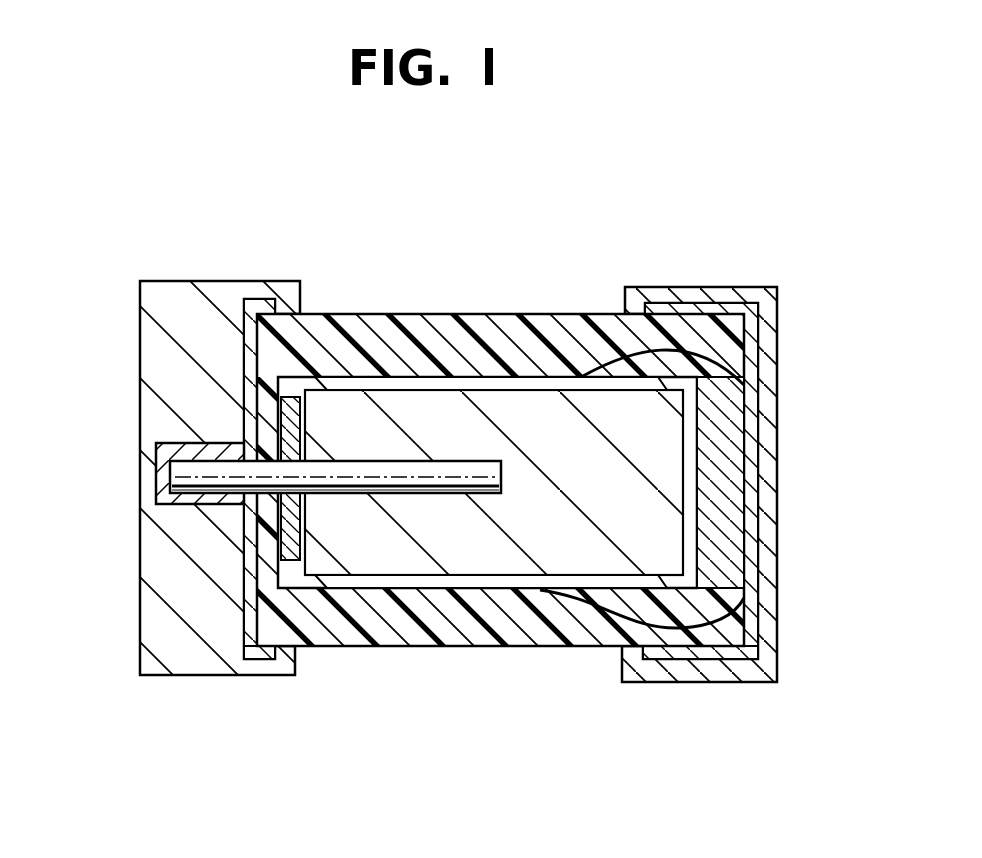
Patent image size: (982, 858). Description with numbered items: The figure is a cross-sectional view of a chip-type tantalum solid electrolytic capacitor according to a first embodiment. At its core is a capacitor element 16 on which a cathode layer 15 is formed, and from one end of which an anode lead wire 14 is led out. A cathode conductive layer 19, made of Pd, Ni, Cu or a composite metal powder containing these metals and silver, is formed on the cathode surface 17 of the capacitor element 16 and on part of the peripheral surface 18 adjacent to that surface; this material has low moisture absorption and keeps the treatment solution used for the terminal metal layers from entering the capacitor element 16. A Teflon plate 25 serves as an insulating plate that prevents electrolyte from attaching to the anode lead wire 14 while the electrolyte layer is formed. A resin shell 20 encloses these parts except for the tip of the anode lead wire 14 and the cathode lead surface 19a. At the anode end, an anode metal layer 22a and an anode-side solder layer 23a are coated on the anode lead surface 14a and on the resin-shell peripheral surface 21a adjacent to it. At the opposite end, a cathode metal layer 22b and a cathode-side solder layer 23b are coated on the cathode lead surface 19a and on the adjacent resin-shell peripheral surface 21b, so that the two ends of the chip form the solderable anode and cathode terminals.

The anode lead wire 14 is at (157, 480).
The anode lead surface 14a is at (160, 462).
The cathode layer 15 is at (361, 378).
The capacitor element 16 is at (489, 400).
The cathode surface 17 is at (700, 504).
The peripheral surface 18 is at (548, 598).
The cathode conductive layer 19 is at (701, 352).
The cathode lead surface 19a is at (745, 412).
The resin shell 20 is at (451, 646).
The resin-shell peripheral surface 21a is at (268, 299).
The resin-shell peripheral surface 21b is at (726, 660).
The anode metal layer 22a is at (255, 659).
The cathode metal layer 22b is at (662, 657).
The anode-side solder layer 23a is at (157, 356).
The cathode-side solder layer 23b is at (768, 594).
The Teflon plate 25 is at (293, 563).